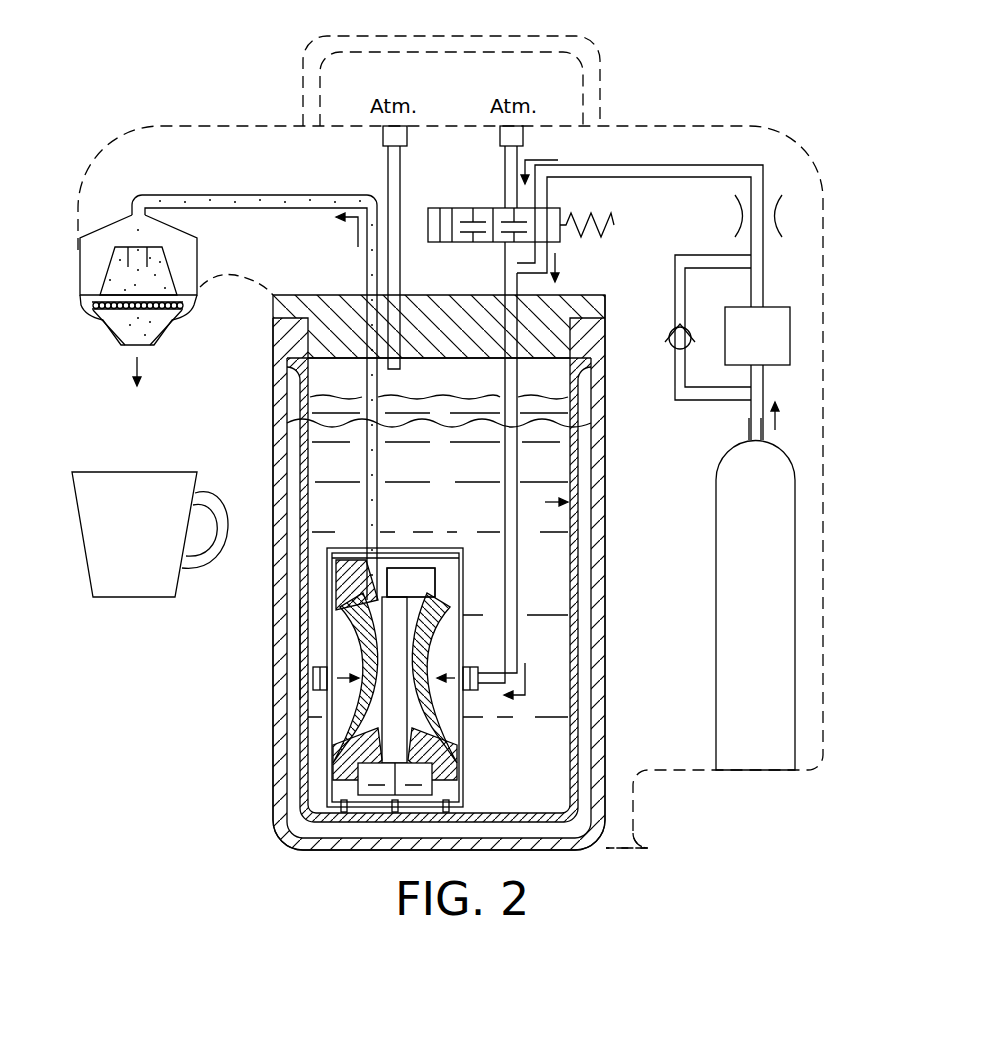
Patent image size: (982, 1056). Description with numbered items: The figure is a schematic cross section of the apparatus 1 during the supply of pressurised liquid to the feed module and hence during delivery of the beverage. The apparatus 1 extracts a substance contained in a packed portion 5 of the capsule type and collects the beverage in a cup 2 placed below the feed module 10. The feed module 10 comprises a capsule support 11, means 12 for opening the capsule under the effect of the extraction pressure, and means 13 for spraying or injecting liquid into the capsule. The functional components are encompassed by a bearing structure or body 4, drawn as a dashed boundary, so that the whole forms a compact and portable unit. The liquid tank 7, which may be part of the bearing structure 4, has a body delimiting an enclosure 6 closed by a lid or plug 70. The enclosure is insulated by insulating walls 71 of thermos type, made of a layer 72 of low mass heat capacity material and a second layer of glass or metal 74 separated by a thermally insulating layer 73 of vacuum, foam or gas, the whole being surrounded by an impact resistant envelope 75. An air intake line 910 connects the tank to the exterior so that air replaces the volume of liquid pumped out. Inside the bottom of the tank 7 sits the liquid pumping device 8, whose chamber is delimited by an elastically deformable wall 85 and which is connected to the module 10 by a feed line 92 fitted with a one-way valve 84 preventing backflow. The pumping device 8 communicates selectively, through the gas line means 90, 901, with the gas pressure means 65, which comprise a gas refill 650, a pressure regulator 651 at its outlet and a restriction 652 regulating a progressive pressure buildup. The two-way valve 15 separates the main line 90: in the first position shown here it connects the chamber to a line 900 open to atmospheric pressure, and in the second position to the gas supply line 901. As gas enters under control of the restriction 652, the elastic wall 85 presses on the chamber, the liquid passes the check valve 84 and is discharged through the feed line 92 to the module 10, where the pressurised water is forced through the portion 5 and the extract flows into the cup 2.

The apparatus 1 is at (696, 821).
The cup 2 is at (135, 600).
The bearing structure or body 4 is at (760, 128).
The packed portion 5 is at (121, 280).
The enclosure 6 is at (353, 658).
The liquid tank 7 is at (436, 554).
The liquid pumping device 8 is at (313, 679).
The feed module 10 is at (135, 299).
The capsule support 11 is at (162, 332).
The means for opening the capsule 12 is at (183, 306).
The means for spraying or injecting liquid 13 is at (197, 245).
The valve 15 is at (463, 205).
The gas pressure means 65 is at (704, 458).
The lid or plug 70 is at (605, 296).
The insulating walls 71 is at (605, 502).
The layer of low mass heat capacity material 72 is at (568, 625).
The thermally insulating layer 73 is at (578, 565).
The layer of glass or metal 74 is at (578, 690).
The impact resistant envelope 75 is at (605, 468).
The one-way valve 84 is at (378, 595).
The elastically deformable wall 85 is at (355, 728).
The main gas line 90 is at (592, 424).
The feed line 92 is at (286, 424).
The gas refill 650 is at (755, 619).
The pressure regulator 651 is at (768, 307).
The restriction 652 is at (733, 213).
The line open to atmospheric pressure 900 is at (521, 152).
The gas supply line 901 is at (678, 165).
The air intake line 910 is at (387, 157).